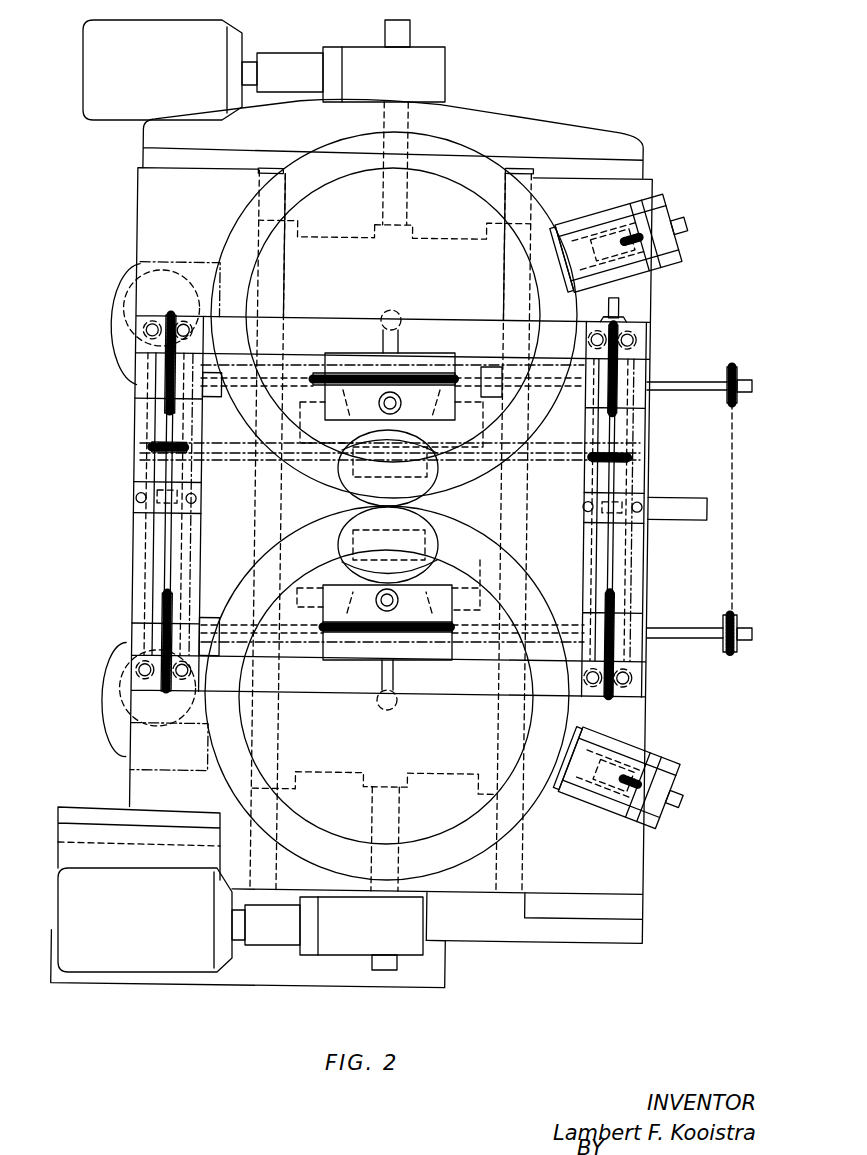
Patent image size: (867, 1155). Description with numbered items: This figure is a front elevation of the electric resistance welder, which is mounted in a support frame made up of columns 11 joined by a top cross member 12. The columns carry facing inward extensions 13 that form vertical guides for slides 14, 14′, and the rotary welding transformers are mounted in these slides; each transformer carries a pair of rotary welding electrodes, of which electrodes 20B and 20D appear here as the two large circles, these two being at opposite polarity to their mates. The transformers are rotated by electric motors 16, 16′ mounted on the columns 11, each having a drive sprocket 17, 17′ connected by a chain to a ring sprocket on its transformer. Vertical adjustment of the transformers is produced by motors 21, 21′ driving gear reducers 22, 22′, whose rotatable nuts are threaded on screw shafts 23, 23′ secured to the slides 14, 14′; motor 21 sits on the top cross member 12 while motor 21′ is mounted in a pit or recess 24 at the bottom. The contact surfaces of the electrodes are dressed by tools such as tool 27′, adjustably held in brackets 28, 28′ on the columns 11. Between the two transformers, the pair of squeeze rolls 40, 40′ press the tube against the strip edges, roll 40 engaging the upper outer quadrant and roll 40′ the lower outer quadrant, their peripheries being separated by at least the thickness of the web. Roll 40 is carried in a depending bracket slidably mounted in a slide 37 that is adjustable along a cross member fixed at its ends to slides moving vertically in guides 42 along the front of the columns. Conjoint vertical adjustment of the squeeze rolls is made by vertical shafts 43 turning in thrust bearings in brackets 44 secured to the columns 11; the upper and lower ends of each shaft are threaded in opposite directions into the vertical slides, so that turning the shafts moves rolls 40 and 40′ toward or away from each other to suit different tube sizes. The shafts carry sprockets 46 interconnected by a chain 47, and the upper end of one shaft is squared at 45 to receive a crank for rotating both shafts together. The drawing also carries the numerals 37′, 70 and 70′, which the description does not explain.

The columns 11 is at (137, 783).
The top cross member 12 is at (481, 125).
The inward extensions 13 is at (157, 215).
The slide 14 is at (420, 260).
The slide 14′ is at (440, 753).
The electric motor 16 is at (122, 358).
The electric motor 16′ is at (115, 735).
The drive sprocket 17 is at (118, 284).
The drive sprocket 17′ is at (123, 665).
The rotary welding electrode 20B is at (300, 167).
The rotary welding electrode 20D is at (297, 840).
The motor 21 is at (160, 82).
The motor 21′ is at (150, 931).
The gear reducer 22 is at (433, 78).
The gear reducer 22′ is at (353, 943).
The screw shaft 23 is at (404, 33).
The screw shaft 23′ is at (395, 963).
The pit or recess 24 is at (258, 972).
The dressing tool 27′ is at (577, 732).
The bracket 28 is at (660, 263).
The bracket 28′ is at (657, 758).
The slide 37 is at (425, 365).
The clamp block 37′ is at (360, 647).
The squeeze roll 40 is at (438, 482).
The squeeze roll 40′ is at (433, 548).
The guides 42 is at (197, 470).
The vertical shaft 43 is at (165, 558).
The bracket 44 is at (140, 488).
The squared end 45 is at (620, 308).
The sprocket 46 is at (152, 447).
The chain 47 is at (562, 460).
The hand wheel 70 is at (685, 385).
The hand wheel 70′ is at (678, 632).